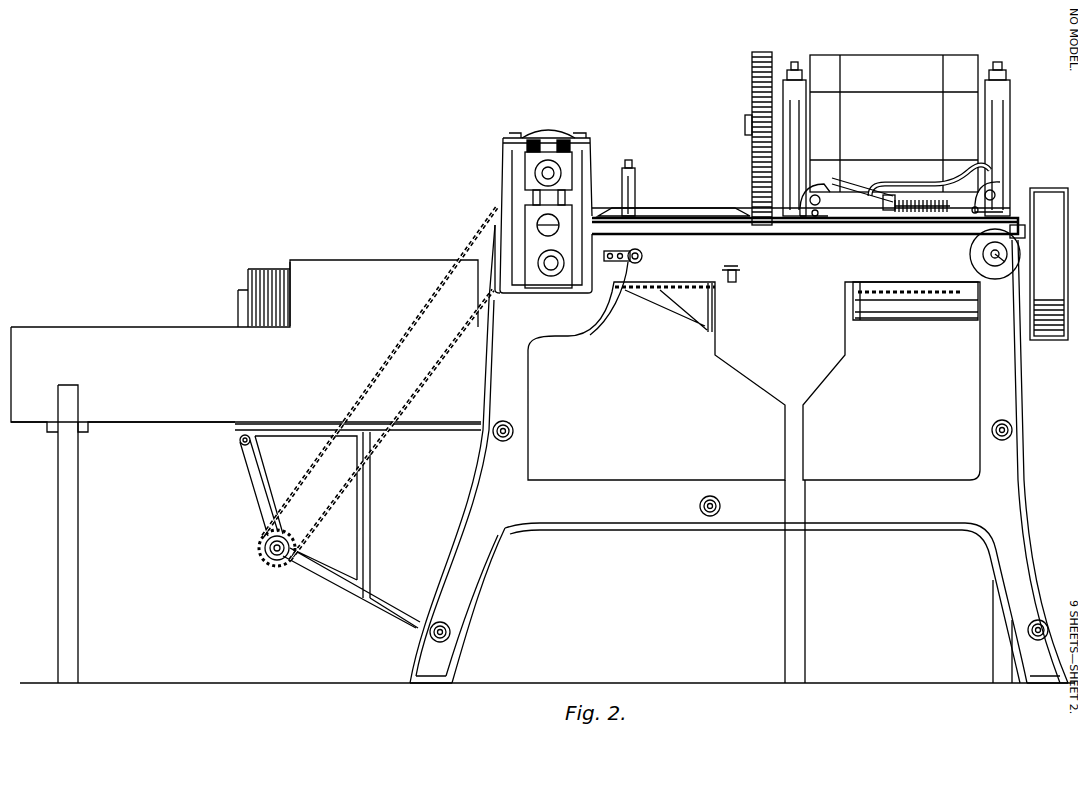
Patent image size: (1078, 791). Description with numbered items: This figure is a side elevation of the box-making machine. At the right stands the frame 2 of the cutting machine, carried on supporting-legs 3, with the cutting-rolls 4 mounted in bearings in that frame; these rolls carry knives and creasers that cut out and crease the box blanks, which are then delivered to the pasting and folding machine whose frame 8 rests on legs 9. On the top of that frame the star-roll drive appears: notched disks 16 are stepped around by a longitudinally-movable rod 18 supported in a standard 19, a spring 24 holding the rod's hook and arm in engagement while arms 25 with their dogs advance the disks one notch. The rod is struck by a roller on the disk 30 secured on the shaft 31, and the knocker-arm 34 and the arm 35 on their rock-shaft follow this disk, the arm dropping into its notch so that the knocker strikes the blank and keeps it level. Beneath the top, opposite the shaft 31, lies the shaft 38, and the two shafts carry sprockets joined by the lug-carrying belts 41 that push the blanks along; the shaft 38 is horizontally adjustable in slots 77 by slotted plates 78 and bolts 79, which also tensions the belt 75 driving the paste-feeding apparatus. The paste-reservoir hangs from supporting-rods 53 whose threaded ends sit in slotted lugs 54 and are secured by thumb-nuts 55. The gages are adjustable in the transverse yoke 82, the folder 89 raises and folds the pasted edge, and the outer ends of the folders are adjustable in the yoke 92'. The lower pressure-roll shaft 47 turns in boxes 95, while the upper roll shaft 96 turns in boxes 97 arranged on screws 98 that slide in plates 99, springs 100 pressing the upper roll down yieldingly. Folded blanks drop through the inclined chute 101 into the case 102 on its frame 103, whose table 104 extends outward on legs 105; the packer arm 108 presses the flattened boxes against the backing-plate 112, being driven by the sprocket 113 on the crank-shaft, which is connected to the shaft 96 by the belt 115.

The frame 2 is at (790, 98).
The supporting-legs 3 is at (800, 600).
The cutting-rolls 4 is at (920, 342).
The frame of the pasting and folding machine 8 is at (805, 235).
The legs 9 is at (498, 565).
The disks 16 is at (820, 210).
The longitudinally-movable rod 18 is at (860, 194).
The standard 19 is at (885, 212).
The spring 24 is at (922, 214).
The arms 25 is at (816, 222).
The disk 30 is at (986, 272).
The shaft 31 is at (1006, 263).
The knocker-arm 34 is at (906, 182).
The arm 35 is at (1020, 217).
The shaft 38 is at (618, 286).
The belts 41 is at (930, 288).
The shaft 47 is at (560, 272).
The supporting-rods 53 is at (700, 306).
The slotted lugs 54 is at (737, 275).
The thumb-nuts 55 is at (731, 268).
The belt 75 is at (682, 306).
The slots 77 is at (644, 256).
The slotted plates 78 is at (610, 262).
The bolts 79 is at (617, 247).
The transverse yoke 82 is at (762, 183).
The folder 89 is at (692, 208).
The yoke 92' is at (651, 188).
The boxes 95 is at (535, 272).
The shaft 96 is at (556, 176).
The boxes 97 is at (540, 170).
The screws 98 is at (545, 198).
The plates 99 is at (570, 138).
The springs 100 is at (540, 138).
The inclined chute 101 is at (470, 254).
The case 102 is at (330, 294).
The frame 103 is at (414, 426).
The table 104 is at (136, 420).
The legs 105 is at (78, 536).
The arm 108 is at (312, 474).
The backing-plate 112 is at (248, 310).
The sprocket 113 is at (272, 564).
The belt 115 is at (392, 372).